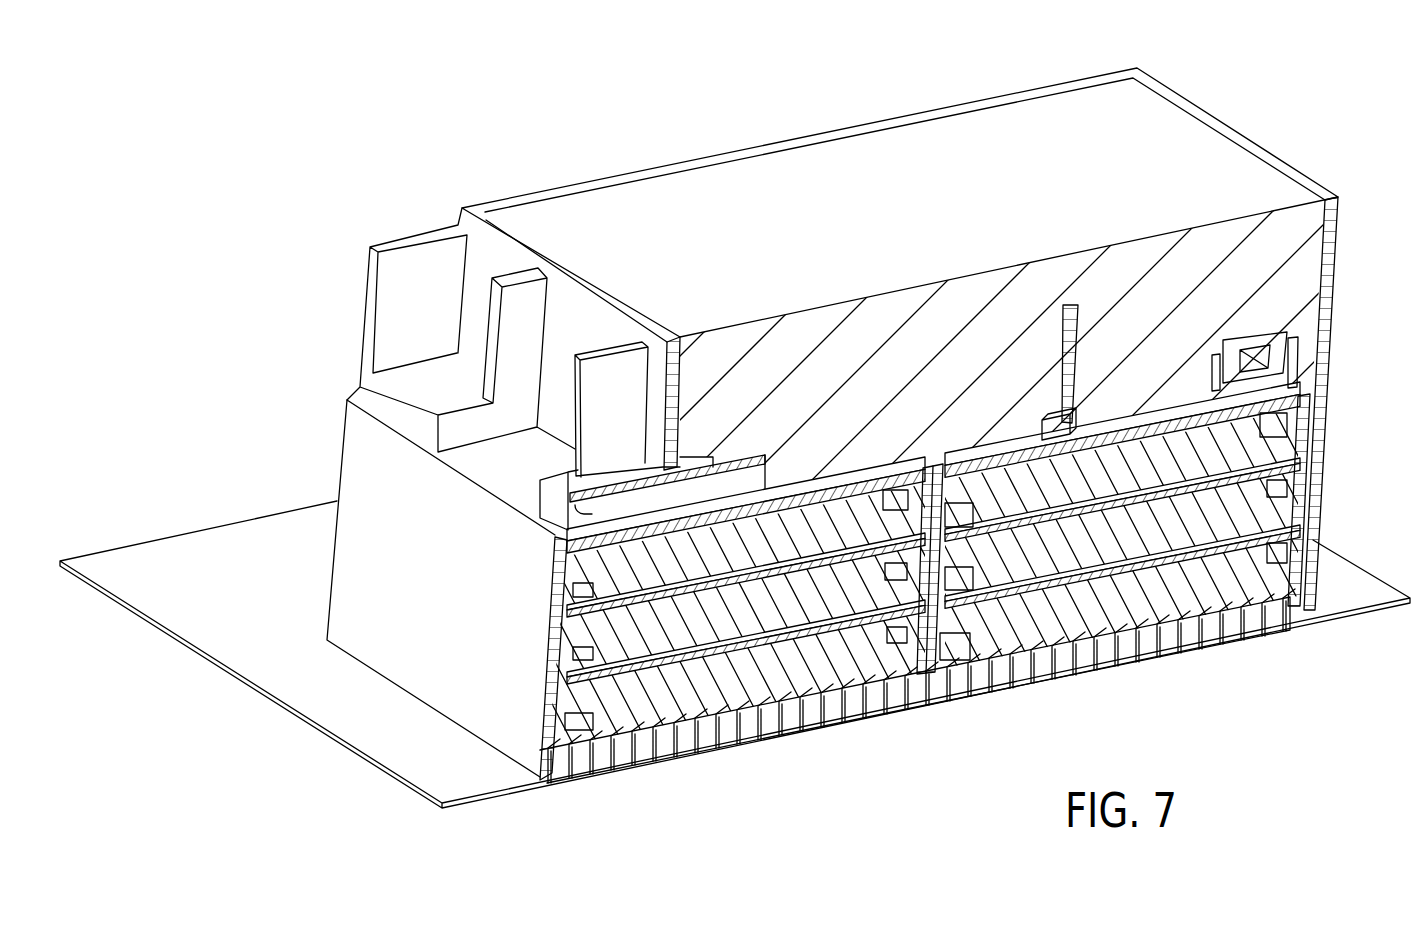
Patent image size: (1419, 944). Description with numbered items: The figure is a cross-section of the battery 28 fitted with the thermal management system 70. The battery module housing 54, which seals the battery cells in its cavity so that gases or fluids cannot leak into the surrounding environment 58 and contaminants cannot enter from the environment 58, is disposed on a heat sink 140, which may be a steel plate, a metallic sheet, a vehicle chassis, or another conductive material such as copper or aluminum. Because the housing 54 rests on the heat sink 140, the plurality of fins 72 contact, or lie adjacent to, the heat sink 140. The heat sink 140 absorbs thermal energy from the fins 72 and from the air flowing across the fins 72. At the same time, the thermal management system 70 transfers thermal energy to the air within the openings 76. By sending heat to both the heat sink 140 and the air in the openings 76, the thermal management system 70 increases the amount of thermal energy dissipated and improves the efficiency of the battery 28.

The battery 28 is at (1262, 82).
The environment 58 is at (263, 301).
The battery module housing 54 is at (517, 727).
The heat sink 140 is at (213, 560).
The thermal management system 70 is at (563, 791).
The openings 76 is at (692, 748).
The fins 72 is at (1062, 668).